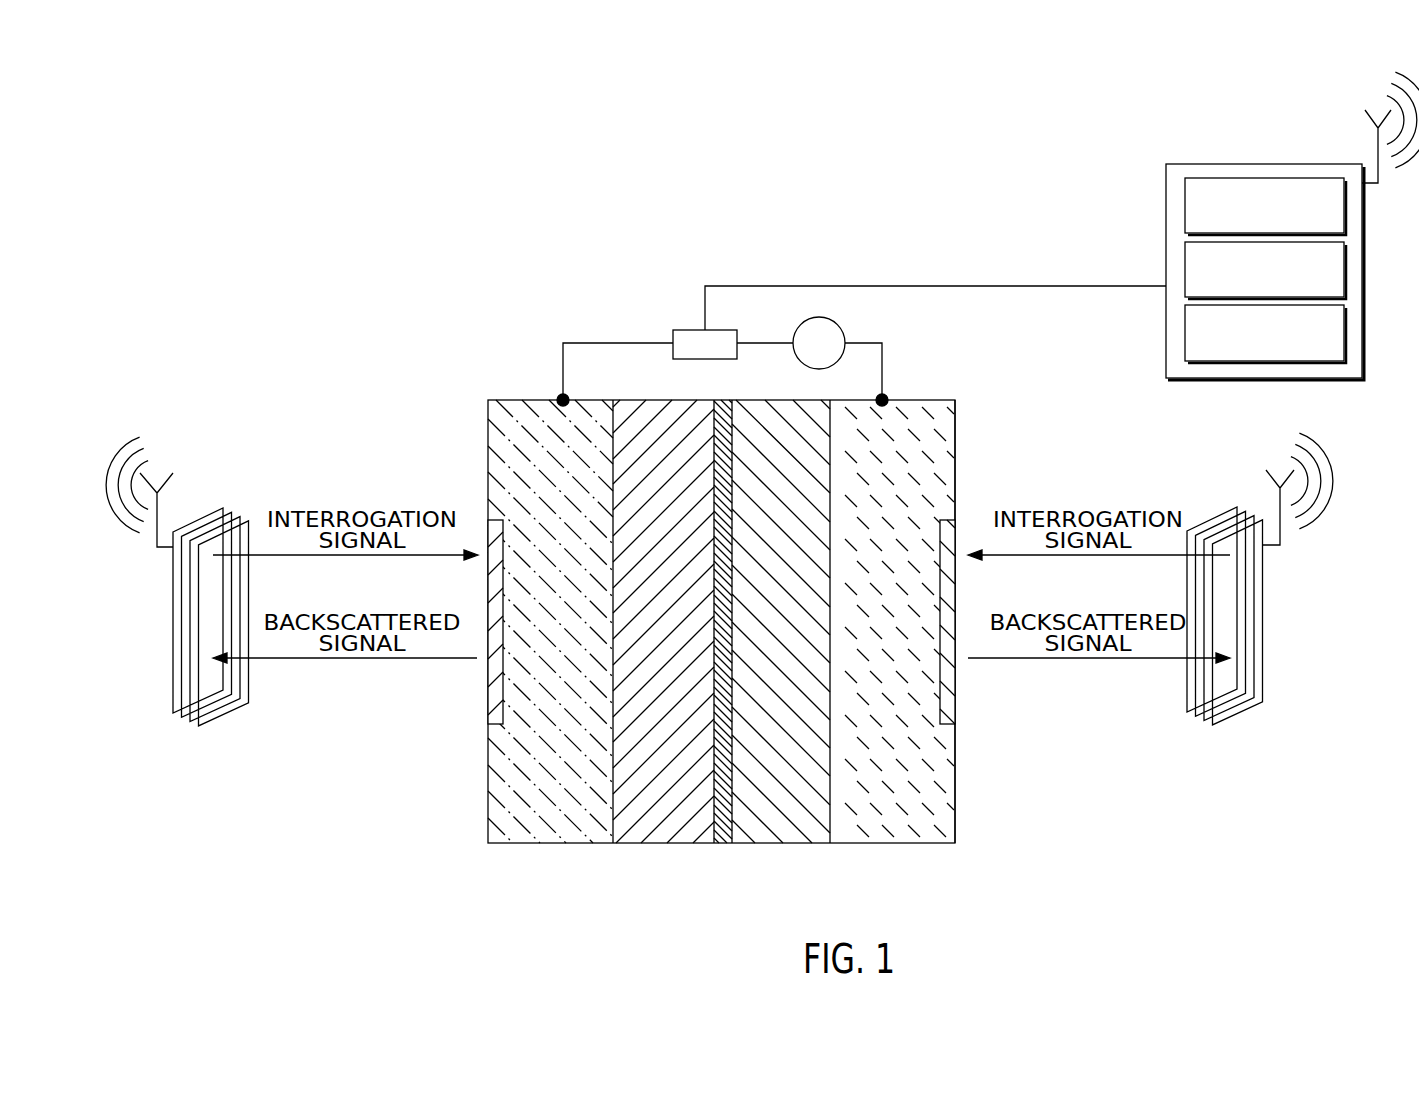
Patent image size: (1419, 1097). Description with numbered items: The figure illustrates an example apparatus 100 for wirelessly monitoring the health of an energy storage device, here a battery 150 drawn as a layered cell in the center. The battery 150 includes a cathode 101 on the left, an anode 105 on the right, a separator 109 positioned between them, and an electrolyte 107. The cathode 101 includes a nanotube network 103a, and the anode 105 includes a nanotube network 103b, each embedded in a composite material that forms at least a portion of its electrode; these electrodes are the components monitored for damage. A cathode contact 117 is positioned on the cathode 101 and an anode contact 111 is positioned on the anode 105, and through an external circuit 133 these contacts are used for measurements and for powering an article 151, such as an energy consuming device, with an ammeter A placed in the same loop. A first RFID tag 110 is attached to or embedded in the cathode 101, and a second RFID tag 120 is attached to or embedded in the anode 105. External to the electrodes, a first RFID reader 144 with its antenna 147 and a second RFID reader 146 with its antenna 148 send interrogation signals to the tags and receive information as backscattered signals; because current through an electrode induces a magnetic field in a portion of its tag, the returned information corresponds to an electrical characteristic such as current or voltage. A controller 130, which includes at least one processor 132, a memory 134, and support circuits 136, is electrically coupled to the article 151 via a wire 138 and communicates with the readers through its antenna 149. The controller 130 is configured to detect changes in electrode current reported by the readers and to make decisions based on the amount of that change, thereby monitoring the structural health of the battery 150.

The apparatus 100 is at (555, 190).
The cathode 101 is at (488, 826).
The nanotube network 103a is at (512, 775).
The nanotube network 103b is at (940, 780).
The anode 105 is at (955, 822).
The electrolyte 107 is at (775, 843).
The separator 109 is at (723, 843).
The first RFID tag 110 is at (489, 704).
The anode contact 111 is at (885, 398).
The cathode contact 117 is at (566, 397).
The second RFID tag 120 is at (955, 690).
The controller 130 is at (1266, 164).
The processor 132 is at (1247, 217).
The memory 134 is at (1247, 281).
The support circuits 136 is at (1247, 345).
The measurement circuit with ammeter 133 is at (580, 343).
The wire 138 is at (1073, 288).
The first RFID reader 144 is at (220, 508).
The second RFID reader 146 is at (1222, 512).
The antenna 147 is at (170, 470).
The antenna 148 is at (1278, 468).
The antenna 149 is at (1372, 108).
The battery 150 is at (968, 468).
The article 151 is at (695, 328).